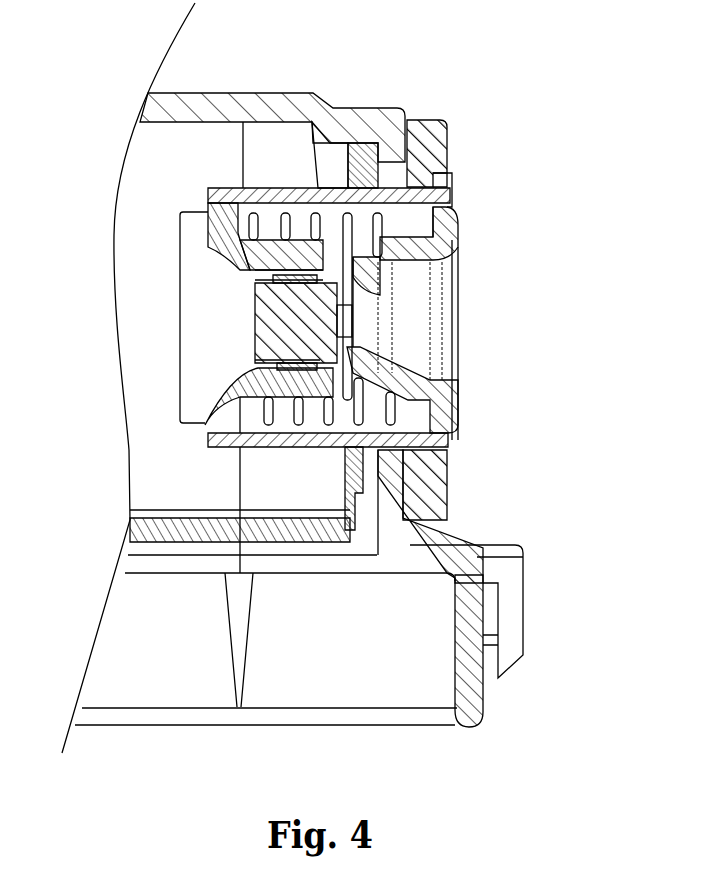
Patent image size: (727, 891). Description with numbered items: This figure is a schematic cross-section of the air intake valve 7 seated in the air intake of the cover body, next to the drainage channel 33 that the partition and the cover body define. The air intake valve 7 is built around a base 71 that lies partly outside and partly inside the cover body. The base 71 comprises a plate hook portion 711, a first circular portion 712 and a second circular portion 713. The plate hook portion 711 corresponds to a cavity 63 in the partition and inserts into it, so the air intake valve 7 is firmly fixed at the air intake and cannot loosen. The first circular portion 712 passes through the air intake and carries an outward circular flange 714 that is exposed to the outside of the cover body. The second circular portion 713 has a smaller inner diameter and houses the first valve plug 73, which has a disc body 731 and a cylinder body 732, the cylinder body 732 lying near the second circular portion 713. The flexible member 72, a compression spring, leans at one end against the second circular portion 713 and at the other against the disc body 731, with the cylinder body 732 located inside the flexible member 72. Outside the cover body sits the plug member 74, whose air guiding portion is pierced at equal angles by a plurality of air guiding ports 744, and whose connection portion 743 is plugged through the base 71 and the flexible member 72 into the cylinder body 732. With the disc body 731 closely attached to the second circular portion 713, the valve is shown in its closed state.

The drainage channel 33 is at (142, 167).
The cavity 63 is at (400, 577).
The air intake valve 7 is at (474, 305).
The base 71 is at (458, 197).
The plate hook portion 711 is at (403, 530).
The first circular portion 712 is at (425, 185).
The second circular portion 713 is at (328, 187).
The circular flange 714 is at (448, 190).
The flexible member 72 is at (450, 447).
The first valve plug 73 is at (203, 292).
The disc body 731 is at (218, 418).
The cylinder body 732 is at (246, 262).
The plug member 74 is at (467, 412).
The connection portion 743 is at (267, 325).
The air guiding ports 744 is at (300, 412).